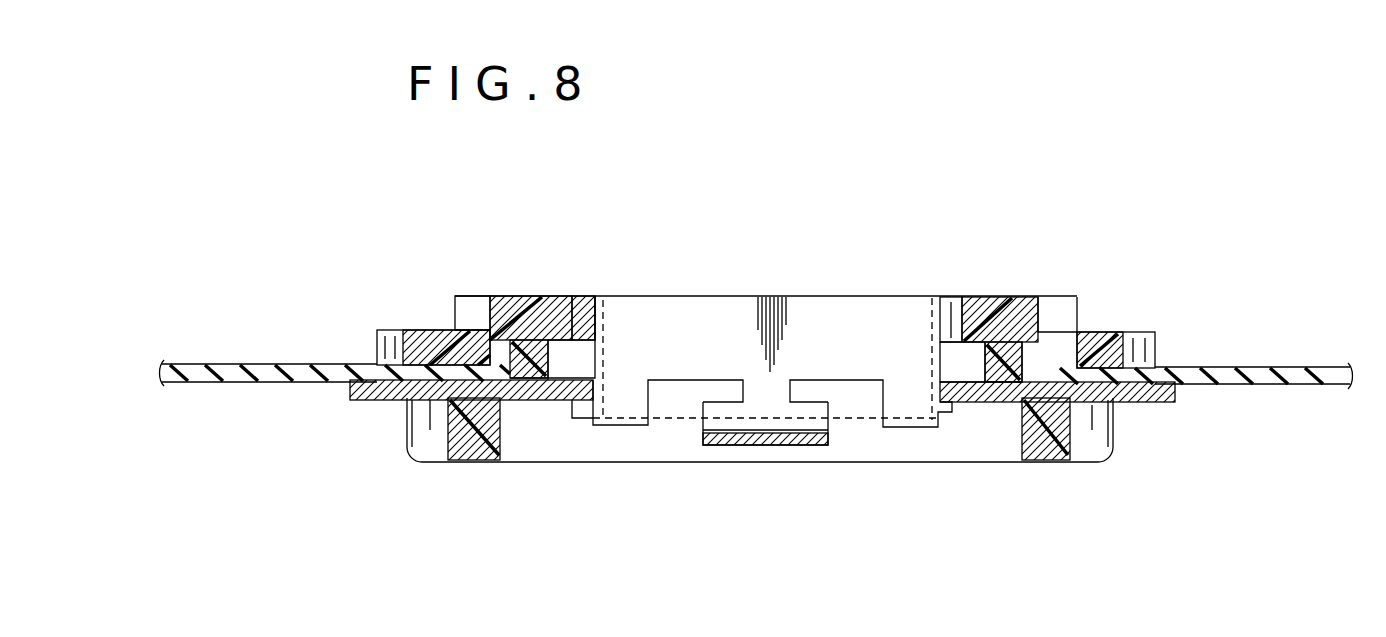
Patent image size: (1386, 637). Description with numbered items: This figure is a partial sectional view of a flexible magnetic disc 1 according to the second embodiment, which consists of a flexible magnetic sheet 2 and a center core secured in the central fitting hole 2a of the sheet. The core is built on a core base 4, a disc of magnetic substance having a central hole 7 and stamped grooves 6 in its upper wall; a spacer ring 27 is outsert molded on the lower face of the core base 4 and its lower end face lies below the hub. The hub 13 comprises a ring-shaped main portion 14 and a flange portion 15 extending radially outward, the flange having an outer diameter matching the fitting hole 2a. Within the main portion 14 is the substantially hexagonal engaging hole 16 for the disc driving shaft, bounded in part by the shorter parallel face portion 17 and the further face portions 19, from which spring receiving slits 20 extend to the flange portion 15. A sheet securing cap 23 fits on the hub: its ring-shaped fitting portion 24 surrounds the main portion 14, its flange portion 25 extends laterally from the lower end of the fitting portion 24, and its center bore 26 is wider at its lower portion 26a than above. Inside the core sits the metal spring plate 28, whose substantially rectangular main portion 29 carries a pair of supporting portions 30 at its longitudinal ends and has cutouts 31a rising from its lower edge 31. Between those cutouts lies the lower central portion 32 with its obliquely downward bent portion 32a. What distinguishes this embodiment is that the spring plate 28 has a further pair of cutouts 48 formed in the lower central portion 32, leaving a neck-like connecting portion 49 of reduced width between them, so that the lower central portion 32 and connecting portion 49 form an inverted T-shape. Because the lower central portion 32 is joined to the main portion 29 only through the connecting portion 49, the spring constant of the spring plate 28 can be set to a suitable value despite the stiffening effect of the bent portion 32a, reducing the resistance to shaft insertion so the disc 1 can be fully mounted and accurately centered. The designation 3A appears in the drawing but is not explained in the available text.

The flexible magnetic disc 1 is at (1260, 203).
The flexible magnetic sheet 2 is at (1272, 380).
The fitting hole 2a is at (502, 445).
The terminal 3A is at (1078, 308).
The core base 4 is at (1160, 405).
The grooves 6 is at (410, 457).
The hole 7 is at (603, 420).
The hub 13 is at (1003, 297).
The main portion 14 is at (950, 297).
The flange portion 15 is at (990, 352).
The engaging hole 16 is at (911, 297).
The parallel face portion 17 is at (675, 410).
The further face portions 19 is at (603, 330).
The spring receiving slits 20 is at (558, 296).
The sheet securing cap 23 is at (476, 295).
The fitting portion 24 is at (542, 358).
The flange portion 25 is at (408, 330).
The center bore 26 is at (590, 296).
The lower portion 26a is at (520, 348).
The spacer ring 27 is at (448, 453).
The spring plate 28 is at (900, 427).
The main portion 29 is at (690, 305).
The supporting portions 30 is at (565, 380).
The lower edge 31 is at (630, 426).
The cutouts 31a is at (648, 385).
The lower central portion 32 is at (810, 428).
The bent portion 32a is at (735, 440).
The cutouts 48 is at (738, 385).
The connecting portion 49 is at (770, 392).